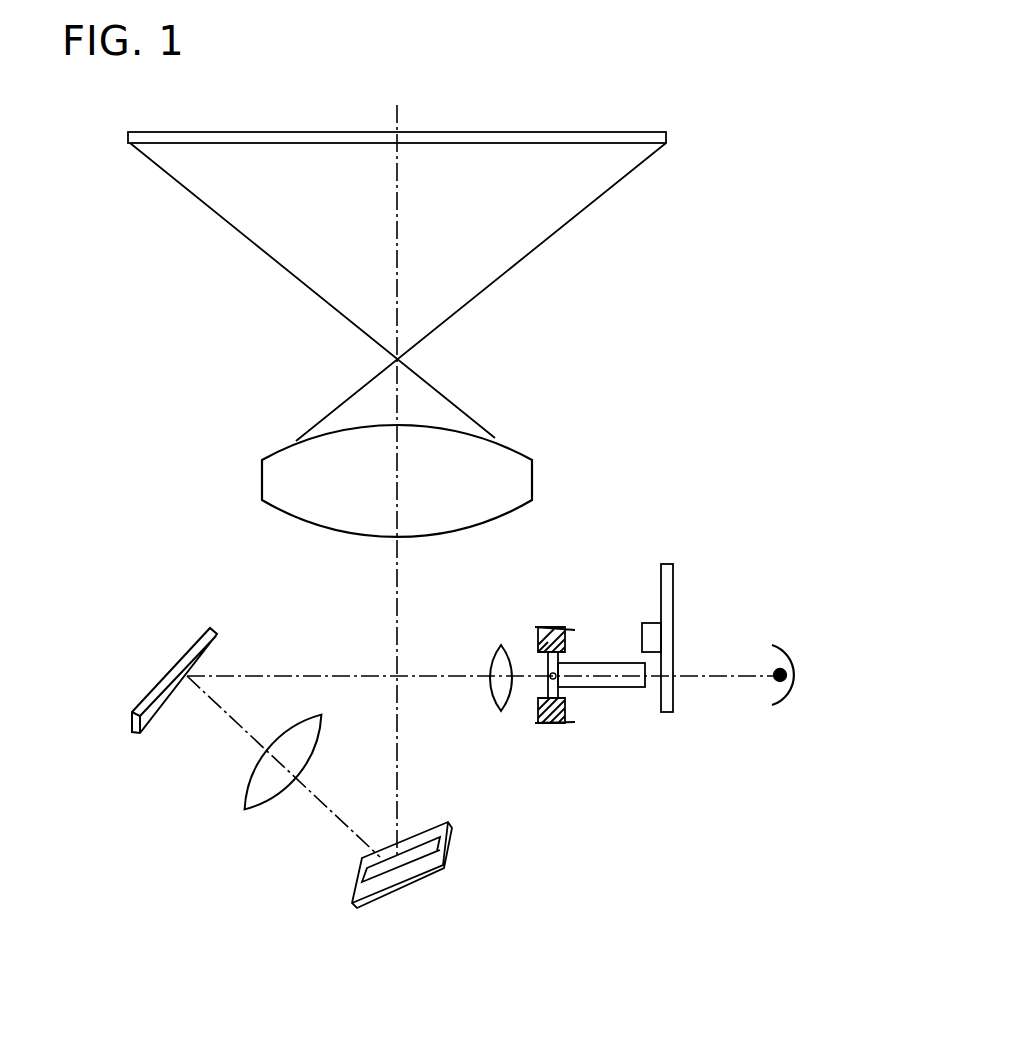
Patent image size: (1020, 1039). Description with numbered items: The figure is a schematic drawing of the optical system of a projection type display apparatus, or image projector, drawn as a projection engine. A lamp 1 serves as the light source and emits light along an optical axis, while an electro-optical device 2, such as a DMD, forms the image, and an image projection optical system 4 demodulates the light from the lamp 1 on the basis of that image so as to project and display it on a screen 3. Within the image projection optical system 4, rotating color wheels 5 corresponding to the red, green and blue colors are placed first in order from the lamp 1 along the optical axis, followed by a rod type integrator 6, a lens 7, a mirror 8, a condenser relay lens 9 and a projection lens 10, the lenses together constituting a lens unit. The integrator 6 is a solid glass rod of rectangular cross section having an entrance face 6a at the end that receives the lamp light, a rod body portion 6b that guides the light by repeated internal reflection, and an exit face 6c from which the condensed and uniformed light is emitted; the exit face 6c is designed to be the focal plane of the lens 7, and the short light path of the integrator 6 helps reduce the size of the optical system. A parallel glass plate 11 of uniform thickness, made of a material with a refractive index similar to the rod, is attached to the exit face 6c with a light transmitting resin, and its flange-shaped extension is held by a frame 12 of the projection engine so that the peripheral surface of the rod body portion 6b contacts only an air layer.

The lamp 1 is at (790, 645).
The electro-optical device 2 is at (445, 852).
The screen 3 is at (605, 133).
The image projection optical system 4 is at (345, 614).
The rotating color wheels 5 is at (673, 585).
The rod type integrator 6 is at (625, 677).
The entrance face 6a is at (650, 683).
The rod body portion 6b is at (600, 687).
The exit face 6c is at (560, 677).
The lens 7 is at (496, 645).
The mirror 8 is at (188, 647).
The condenser relay lens 9 is at (260, 788).
The projection lens 10 is at (480, 455).
The parallel glass plate 11 is at (552, 676).
The frame 12 is at (545, 722).